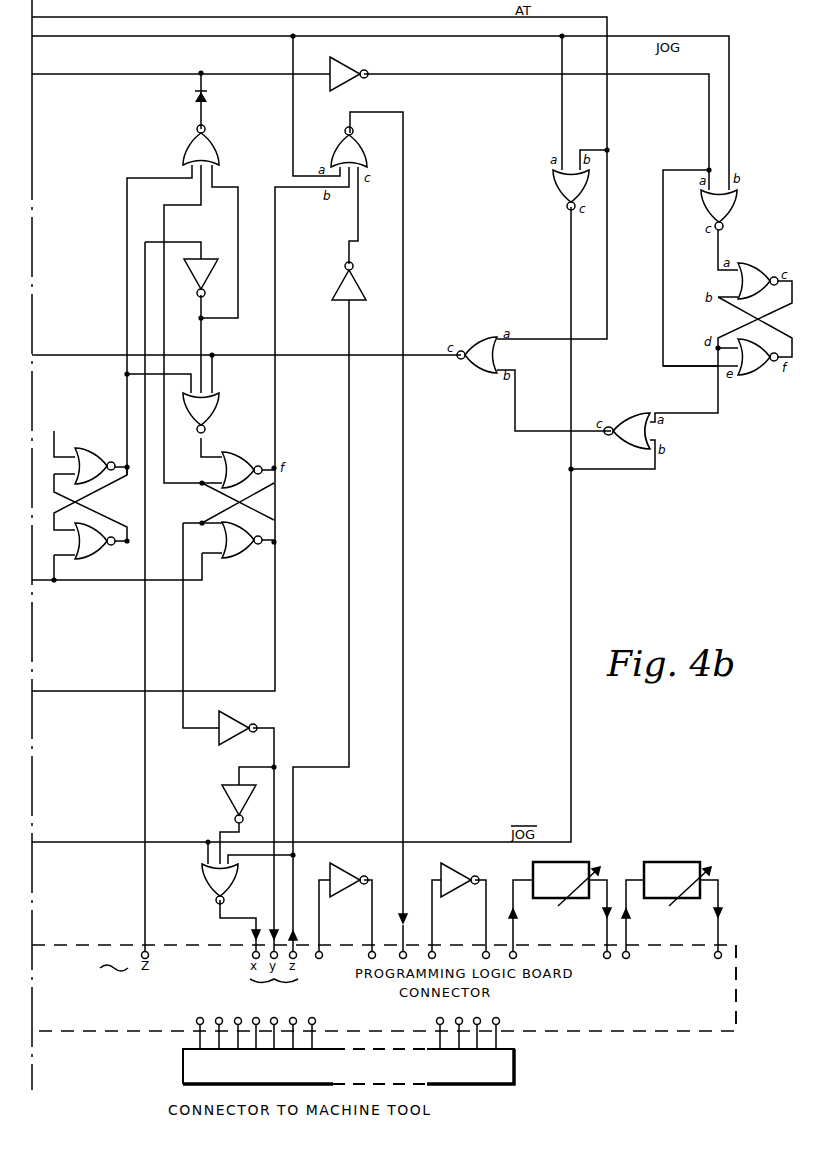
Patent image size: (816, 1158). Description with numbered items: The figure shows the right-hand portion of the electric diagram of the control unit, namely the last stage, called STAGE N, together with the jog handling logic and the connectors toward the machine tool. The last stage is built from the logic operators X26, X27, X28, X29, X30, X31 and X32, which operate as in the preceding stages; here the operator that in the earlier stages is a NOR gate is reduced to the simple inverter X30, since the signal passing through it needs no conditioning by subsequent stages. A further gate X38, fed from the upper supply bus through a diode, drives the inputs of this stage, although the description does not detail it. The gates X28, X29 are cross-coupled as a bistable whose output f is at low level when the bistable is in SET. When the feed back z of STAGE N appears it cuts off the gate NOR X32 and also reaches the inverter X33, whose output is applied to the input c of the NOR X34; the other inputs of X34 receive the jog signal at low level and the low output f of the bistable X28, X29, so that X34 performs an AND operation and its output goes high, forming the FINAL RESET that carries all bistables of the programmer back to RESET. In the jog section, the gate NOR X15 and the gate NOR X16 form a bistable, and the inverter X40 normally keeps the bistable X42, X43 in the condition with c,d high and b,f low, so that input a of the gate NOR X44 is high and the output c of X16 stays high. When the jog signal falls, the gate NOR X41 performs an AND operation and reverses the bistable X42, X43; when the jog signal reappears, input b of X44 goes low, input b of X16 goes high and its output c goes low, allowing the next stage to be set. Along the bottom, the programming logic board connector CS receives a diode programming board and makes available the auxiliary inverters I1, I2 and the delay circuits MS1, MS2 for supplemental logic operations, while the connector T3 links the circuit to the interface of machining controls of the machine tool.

The NOR gate X38 is at (201, 145).
The logic operator X26 is at (201, 278).
The logic operator X27 is at (201, 413).
The bistable X28 is at (242, 470).
The bistable X29 is at (242, 540).
The inverter X30 is at (238, 728).
The logic operator X31 is at (239, 804).
The gate NOR X32 is at (220, 884).
The inverter X33 is at (349, 281).
The gate NOR X34 is at (349, 147).
The inverter X40 is at (349, 74).
The gate NOR X15 is at (571, 190).
The gate NOR X41 is at (719, 210).
The bistable X42 is at (758, 281).
The bistable X43 is at (758, 357).
The gate NOR X44 is at (627, 431).
The gate NOR X16 is at (477, 355).
The inverter I1 is at (349, 880).
The inverter I2 is at (460, 880).
The delay circuit MS1 is at (566, 884).
The delay circuit MS2 is at (677, 884).
The connector T3 is at (348, 1066).
The connector CS is at (606, 1034).